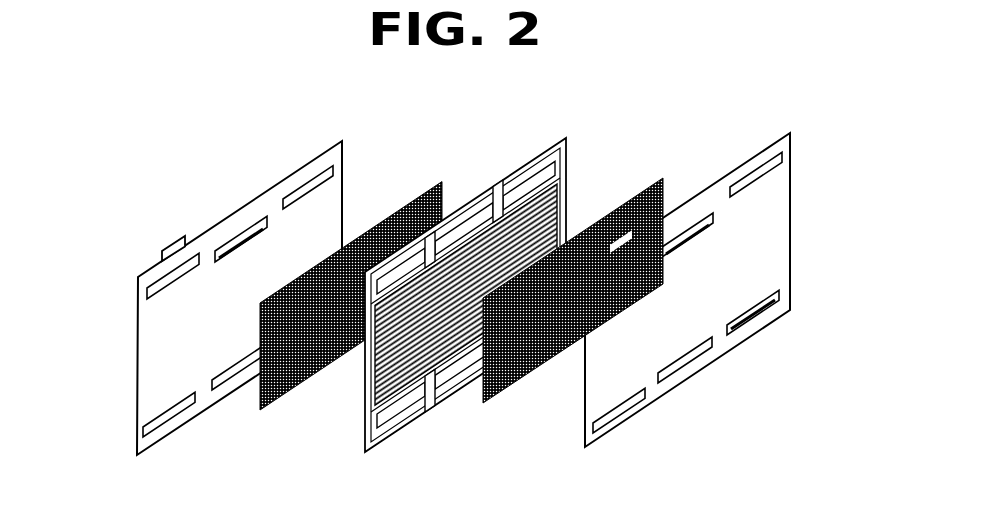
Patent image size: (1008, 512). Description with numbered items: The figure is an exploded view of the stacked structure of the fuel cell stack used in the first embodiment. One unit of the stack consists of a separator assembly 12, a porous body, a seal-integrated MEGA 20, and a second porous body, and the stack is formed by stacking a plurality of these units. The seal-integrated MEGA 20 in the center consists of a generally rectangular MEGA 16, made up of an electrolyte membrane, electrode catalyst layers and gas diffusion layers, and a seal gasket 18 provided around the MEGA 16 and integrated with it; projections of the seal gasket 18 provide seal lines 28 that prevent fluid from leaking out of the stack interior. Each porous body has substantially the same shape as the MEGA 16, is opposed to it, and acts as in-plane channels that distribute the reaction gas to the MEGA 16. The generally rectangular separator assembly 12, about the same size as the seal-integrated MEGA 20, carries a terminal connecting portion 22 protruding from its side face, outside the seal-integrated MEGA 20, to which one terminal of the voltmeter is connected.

The separator assembly 12 is at (463, 282).
The MEGA 16 is at (558, 208).
The seal gasket 18 is at (500, 198).
The seal-integrated MEGA 20 is at (442, 411).
The terminal connecting portion 22 is at (167, 250).
The seal line 28 is at (452, 388).